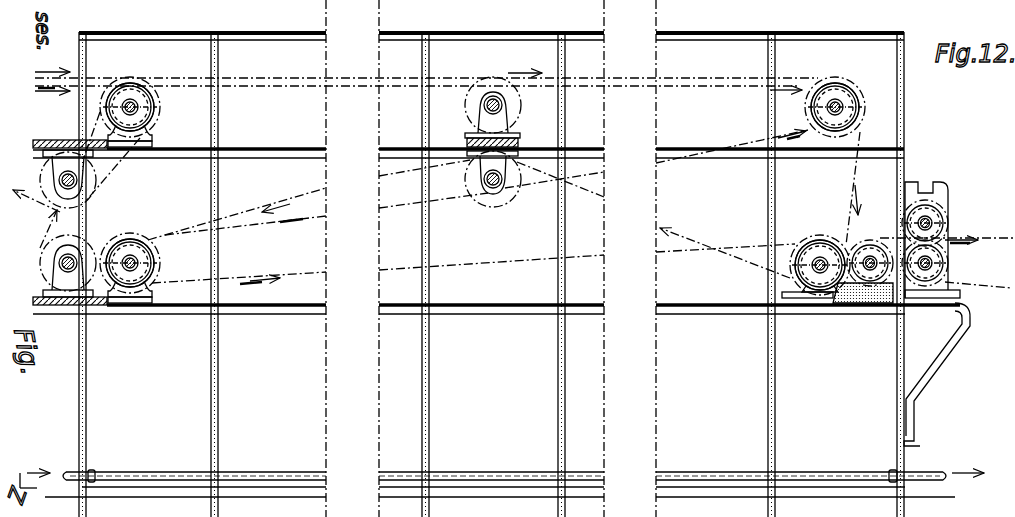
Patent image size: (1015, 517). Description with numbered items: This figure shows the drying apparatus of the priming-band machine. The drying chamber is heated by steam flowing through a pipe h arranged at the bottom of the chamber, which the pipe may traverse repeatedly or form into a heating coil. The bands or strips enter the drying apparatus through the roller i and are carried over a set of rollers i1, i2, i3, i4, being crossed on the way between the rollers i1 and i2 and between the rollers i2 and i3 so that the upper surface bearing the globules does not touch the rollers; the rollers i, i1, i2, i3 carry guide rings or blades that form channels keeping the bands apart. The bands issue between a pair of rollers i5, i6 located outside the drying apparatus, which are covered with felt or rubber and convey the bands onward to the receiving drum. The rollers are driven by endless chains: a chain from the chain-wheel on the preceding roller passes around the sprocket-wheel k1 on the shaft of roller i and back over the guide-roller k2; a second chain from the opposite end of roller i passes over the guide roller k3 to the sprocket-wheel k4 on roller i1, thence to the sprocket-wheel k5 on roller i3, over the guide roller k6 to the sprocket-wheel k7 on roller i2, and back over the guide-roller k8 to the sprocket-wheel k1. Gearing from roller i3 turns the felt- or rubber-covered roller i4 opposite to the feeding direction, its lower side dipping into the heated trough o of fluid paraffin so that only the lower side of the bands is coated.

The sprocket-wheel k1 is at (134, 86).
The roller i is at (152, 108).
The guide-roller k2 is at (97, 206).
The sprocket-wheel k7 is at (133, 241).
The guide-roller k8 is at (44, 258).
The roller i2 is at (152, 263).
The guide roller k3 is at (467, 104).
The guide roller k6 is at (488, 206).
The pipe h is at (462, 470).
The sprocket-wheel k4 is at (838, 82).
The roller i1 is at (849, 104).
The roller i3 is at (808, 248).
The sprocket-wheel k5 is at (827, 240).
The roller i4 is at (874, 245).
The roller i5 is at (944, 264).
The roller i6 is at (944, 223).
The trough o is at (868, 304).